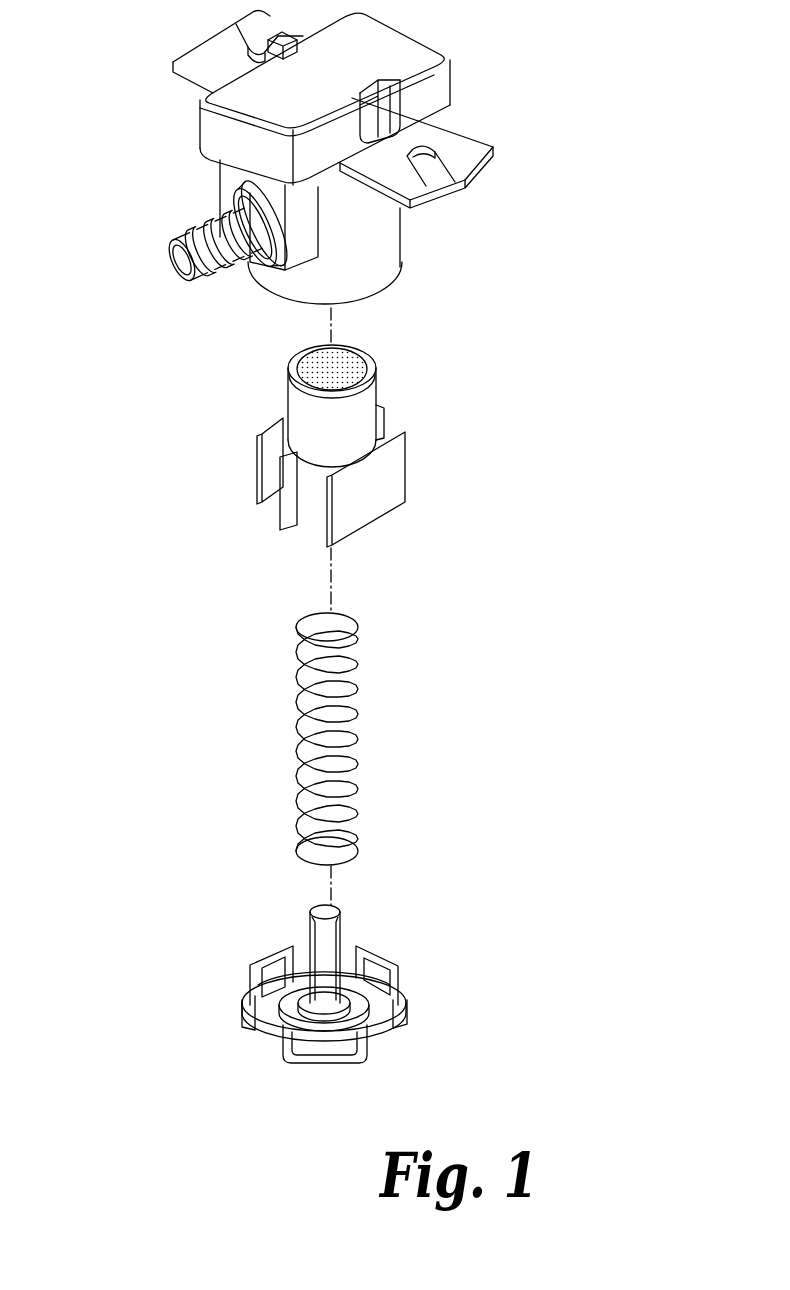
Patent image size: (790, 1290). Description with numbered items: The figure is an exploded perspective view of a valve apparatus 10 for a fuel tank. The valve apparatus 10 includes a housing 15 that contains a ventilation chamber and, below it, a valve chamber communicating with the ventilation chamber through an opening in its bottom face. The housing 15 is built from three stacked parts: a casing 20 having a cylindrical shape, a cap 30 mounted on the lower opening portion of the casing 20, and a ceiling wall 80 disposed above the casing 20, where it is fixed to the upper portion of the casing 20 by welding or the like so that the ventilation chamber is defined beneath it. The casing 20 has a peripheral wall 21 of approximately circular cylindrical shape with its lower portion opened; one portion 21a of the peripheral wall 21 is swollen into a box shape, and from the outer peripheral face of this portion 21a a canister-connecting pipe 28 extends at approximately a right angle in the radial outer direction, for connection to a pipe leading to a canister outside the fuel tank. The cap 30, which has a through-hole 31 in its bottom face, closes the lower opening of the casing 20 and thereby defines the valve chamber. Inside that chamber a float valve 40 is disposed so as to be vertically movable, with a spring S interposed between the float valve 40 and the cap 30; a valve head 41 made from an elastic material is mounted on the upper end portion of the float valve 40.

The valve apparatus 10 is at (156, 126).
The housing 15 is at (613, 130).
The casing 20 is at (385, 196).
The peripheral wall 21 is at (345, 254).
The portion of peripheral wall 21a is at (297, 255).
The canister-connecting pipe 28 is at (192, 283).
The cap 30 is at (427, 970).
The through-hole 31 is at (325, 1040).
The float valve 40 is at (303, 458).
The valve head 41 is at (355, 356).
The ceiling wall 80 is at (450, 83).
The spring S is at (296, 722).